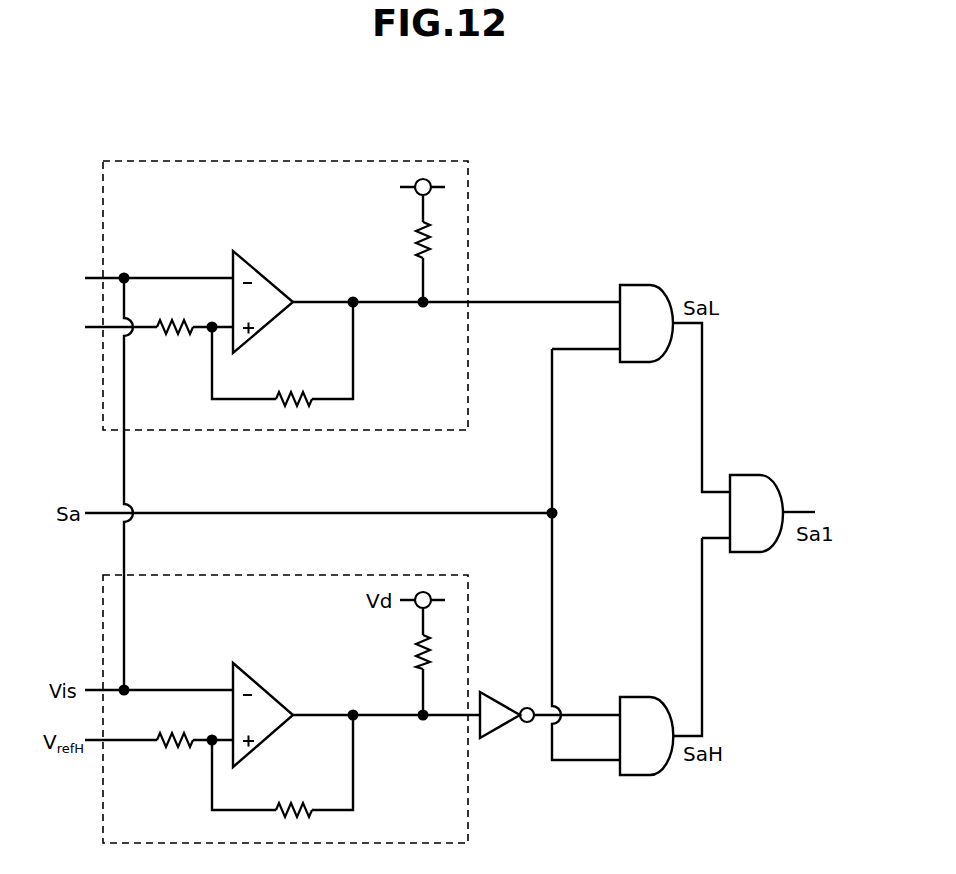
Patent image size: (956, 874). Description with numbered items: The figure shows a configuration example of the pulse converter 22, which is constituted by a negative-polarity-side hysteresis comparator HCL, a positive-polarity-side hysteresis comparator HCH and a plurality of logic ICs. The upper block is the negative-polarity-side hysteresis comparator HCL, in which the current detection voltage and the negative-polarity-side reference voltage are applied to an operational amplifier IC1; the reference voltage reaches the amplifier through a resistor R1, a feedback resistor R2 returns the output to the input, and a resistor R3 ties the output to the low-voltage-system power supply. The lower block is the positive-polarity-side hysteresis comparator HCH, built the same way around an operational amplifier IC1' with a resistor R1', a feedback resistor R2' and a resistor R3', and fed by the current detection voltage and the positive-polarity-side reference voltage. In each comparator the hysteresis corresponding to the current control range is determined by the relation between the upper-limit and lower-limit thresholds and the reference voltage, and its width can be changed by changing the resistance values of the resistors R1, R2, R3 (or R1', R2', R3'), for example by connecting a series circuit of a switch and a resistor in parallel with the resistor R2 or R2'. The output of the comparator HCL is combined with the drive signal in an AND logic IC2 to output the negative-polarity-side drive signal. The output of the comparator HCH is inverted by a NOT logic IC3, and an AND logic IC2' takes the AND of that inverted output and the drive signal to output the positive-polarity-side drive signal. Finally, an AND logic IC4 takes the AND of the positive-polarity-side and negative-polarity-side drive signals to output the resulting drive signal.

The pulse converter 22 is at (318, 148).
The negative-polarity-side hysteresis comparator HCL is at (285, 295).
The positive-polarity-side hysteresis comparator HCH is at (285, 709).
The operational amplifier IC1 is at (268, 302).
The operational amplifier IC1' is at (270, 715).
The AND logic IC IC2 is at (661, 311).
The AND logic IC IC2' is at (647, 723).
The NOT logic IC IC3 is at (507, 726).
The AND logic IC IC4 is at (757, 499).
The resistor R1 is at (173, 344).
The resistor R1' is at (173, 757).
The resistor R2 is at (294, 387).
The resistor R2' is at (294, 798).
The resistor R3 is at (404, 240).
The resistor R3' is at (402, 652).